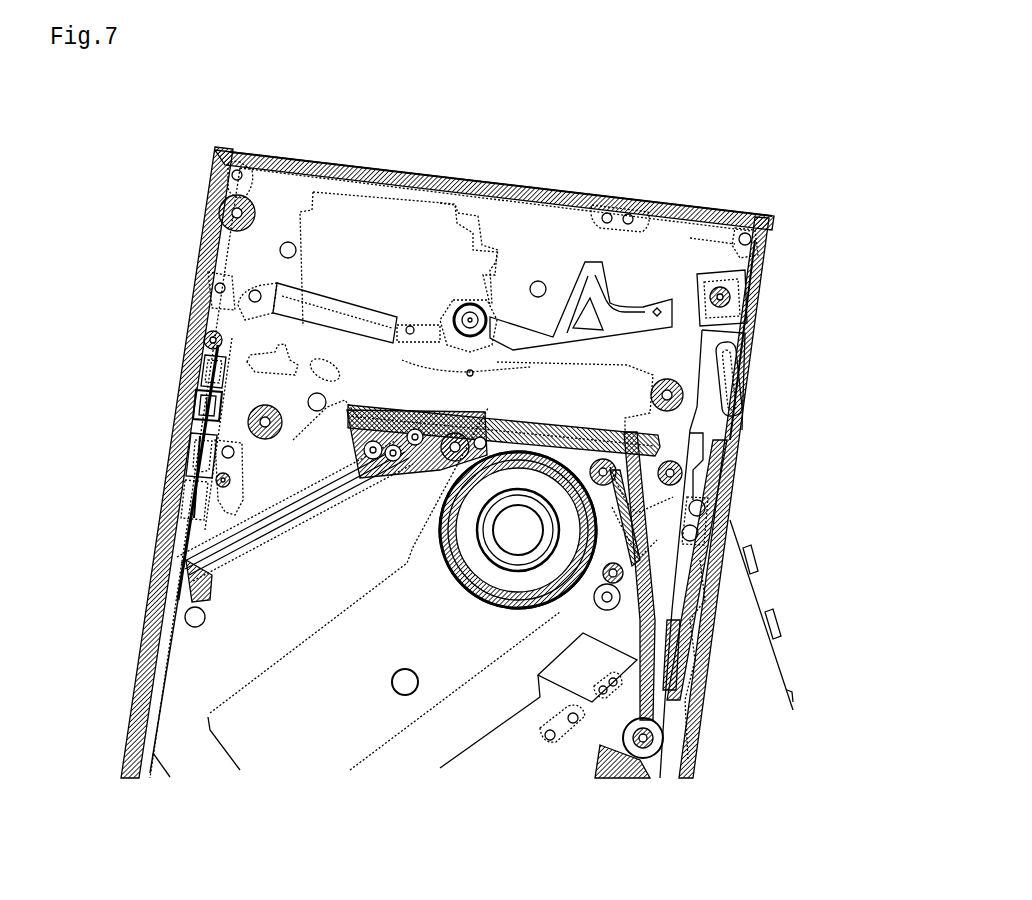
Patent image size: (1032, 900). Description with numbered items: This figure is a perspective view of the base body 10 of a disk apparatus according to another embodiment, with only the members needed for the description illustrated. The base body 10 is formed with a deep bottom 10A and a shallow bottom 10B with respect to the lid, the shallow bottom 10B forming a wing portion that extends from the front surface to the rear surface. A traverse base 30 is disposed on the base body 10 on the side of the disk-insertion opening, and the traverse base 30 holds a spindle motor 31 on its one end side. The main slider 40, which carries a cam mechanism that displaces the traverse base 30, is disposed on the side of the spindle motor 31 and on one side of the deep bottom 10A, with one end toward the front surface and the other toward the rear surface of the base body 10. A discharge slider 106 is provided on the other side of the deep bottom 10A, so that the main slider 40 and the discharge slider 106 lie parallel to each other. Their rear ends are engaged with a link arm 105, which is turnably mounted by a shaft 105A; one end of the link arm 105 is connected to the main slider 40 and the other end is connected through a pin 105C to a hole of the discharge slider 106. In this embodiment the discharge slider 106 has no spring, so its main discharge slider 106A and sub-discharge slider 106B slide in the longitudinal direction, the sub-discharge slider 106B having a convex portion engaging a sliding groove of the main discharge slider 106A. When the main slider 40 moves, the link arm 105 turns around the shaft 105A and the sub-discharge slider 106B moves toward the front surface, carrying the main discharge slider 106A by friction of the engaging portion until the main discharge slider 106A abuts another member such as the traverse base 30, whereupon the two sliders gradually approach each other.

The base body 10 is at (878, 258).
The deep bottom 10A is at (768, 250).
The shallow bottom 10B is at (770, 320).
The link arm 105 is at (313, 313).
The shaft 105A is at (473, 300).
The pin 105C is at (188, 343).
The discharge slider 106 is at (92, 382).
The main discharge slider 106A is at (172, 482).
The sub-discharge slider 106B is at (177, 400).
The traverse base 30 is at (248, 660).
The spindle motor 31 is at (572, 540).
The main slider 40 is at (740, 457).